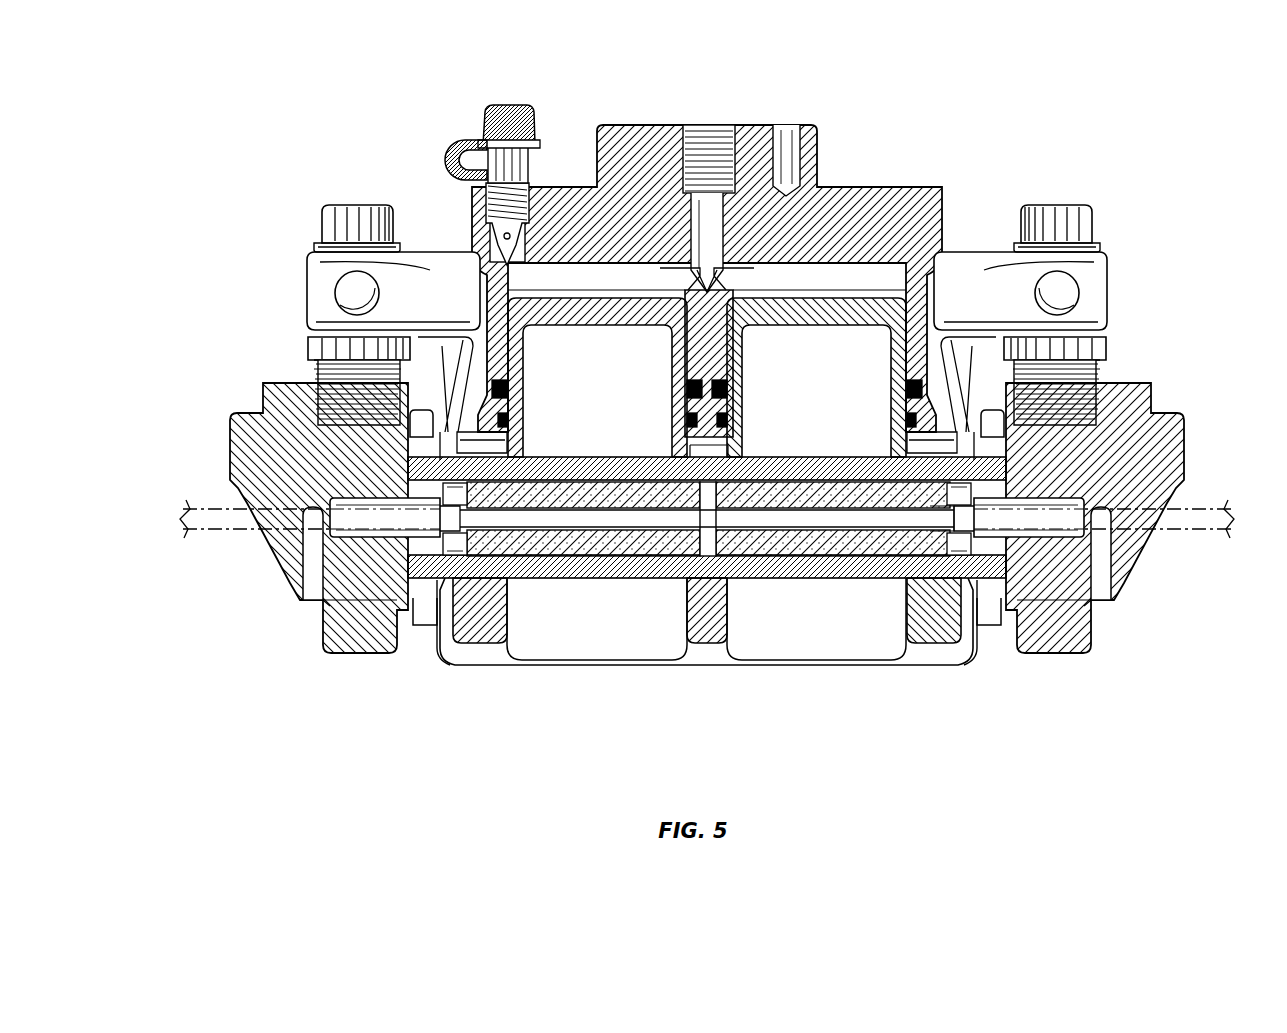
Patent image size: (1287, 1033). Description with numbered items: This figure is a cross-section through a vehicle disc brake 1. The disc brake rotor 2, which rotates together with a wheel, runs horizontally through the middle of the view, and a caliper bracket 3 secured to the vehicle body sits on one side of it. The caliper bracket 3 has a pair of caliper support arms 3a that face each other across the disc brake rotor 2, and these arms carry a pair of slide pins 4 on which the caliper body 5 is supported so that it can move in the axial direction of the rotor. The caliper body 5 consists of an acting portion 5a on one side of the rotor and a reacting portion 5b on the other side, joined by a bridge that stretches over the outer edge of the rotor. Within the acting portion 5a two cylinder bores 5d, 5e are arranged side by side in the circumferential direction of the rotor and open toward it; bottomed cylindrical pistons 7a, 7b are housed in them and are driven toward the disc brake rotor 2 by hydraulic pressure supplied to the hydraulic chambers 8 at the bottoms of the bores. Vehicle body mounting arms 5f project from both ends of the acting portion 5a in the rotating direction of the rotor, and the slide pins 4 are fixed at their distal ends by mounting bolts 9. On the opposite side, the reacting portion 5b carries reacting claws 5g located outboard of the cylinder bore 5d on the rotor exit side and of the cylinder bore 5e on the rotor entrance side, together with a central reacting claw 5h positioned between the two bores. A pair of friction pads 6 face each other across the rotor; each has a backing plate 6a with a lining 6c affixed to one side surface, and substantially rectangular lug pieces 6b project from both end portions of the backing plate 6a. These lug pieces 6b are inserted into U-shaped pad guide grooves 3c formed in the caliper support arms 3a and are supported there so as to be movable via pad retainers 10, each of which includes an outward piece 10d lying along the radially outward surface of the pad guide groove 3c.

The vehicle disc brake 1 is at (717, 57).
The disc brake rotor 2 is at (1194, 520).
The caliper bracket 3 is at (1192, 431).
The caliper support arm 3a is at (322, 604).
The pad guide groove 3c is at (412, 442).
The slide pin 4 is at (310, 346).
The caliper body 5 is at (910, 178).
The acting portion 5a is at (640, 135).
The reacting portion 5b is at (655, 660).
The cylinder bore 5d is at (740, 366).
The cylinder bore 5e is at (514, 368).
The vehicle body mounting arm 5f is at (440, 262).
The reacting claw 5g is at (490, 618).
The reacting claw 5h is at (720, 606).
The friction pad 6 is at (562, 420).
The backing plate 6a is at (583, 482).
The lug piece 6b is at (400, 461).
The lining 6c is at (612, 506).
The piston 7a is at (822, 316).
The piston 7b is at (618, 312).
The hydraulic chamber 8 is at (593, 298).
The mounting bolt 9 is at (356, 206).
The pad retainer 10 is at (423, 630).
The outward piece 10d is at (400, 485).